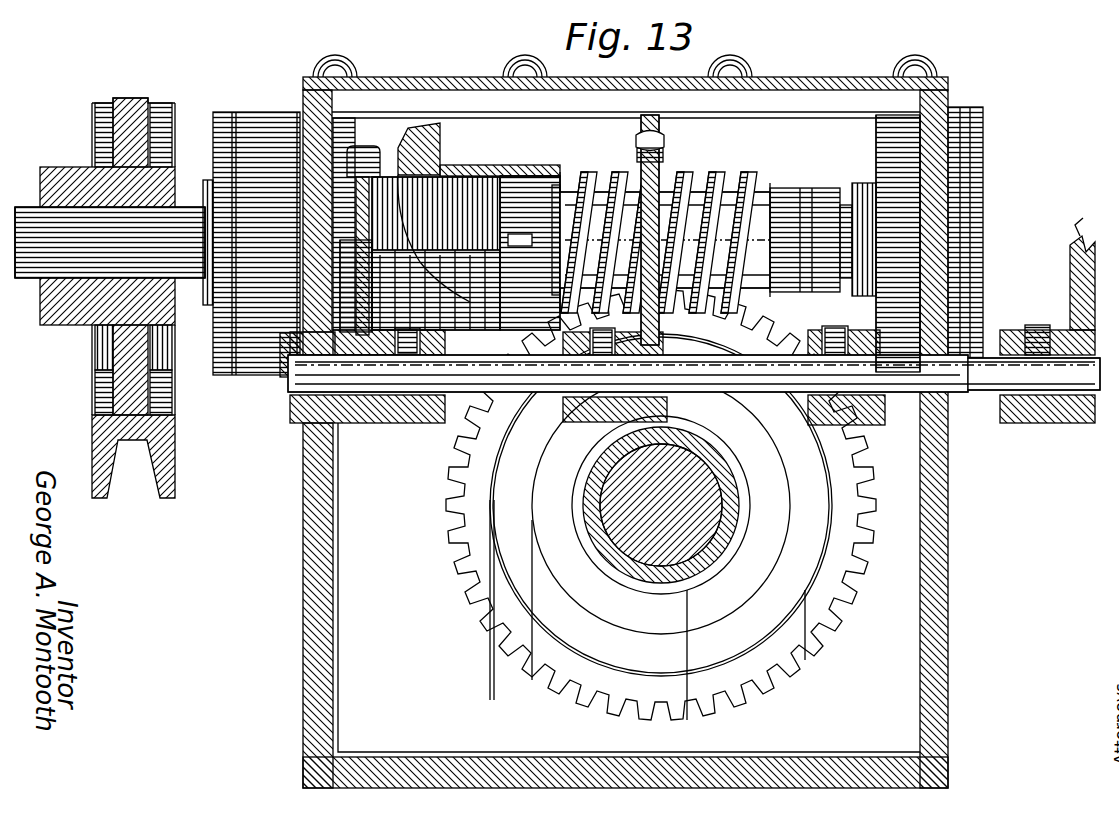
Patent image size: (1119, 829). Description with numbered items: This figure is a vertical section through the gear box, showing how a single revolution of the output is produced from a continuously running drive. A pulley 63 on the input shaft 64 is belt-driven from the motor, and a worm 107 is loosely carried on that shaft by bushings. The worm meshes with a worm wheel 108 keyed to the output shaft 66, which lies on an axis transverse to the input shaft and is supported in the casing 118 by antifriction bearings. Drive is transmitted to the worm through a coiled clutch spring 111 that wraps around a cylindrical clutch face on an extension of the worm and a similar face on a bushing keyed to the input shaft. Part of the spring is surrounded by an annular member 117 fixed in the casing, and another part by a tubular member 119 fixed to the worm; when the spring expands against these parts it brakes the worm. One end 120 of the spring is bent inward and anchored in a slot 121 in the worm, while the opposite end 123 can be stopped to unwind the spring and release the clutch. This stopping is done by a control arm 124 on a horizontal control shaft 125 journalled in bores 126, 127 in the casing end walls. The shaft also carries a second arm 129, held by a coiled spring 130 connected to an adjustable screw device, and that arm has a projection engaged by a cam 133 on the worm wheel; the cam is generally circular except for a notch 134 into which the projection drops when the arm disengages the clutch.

The pulley 63 is at (160, 463).
The input shaft 64 is at (183, 235).
The output shaft 66 is at (695, 535).
The worm 107 is at (735, 195).
The worm wheel 108 is at (528, 668).
The coiled clutch spring 111 is at (470, 176).
The annular member 117 is at (418, 150).
The casing 118 is at (938, 556).
The tubular member 119 is at (520, 172).
The end of clutch spring 120 is at (515, 236).
The slot 121 is at (570, 190).
The opposite end of clutch spring 123 is at (357, 195).
The control arm 124 is at (357, 262).
The control shaft 125 is at (472, 382).
The bore 126 is at (307, 425).
The bore 127 is at (900, 402).
The second arm 129 is at (664, 162).
The coiled spring 130 is at (664, 140).
The cam 133 is at (790, 467).
The notch 134 is at (750, 328).